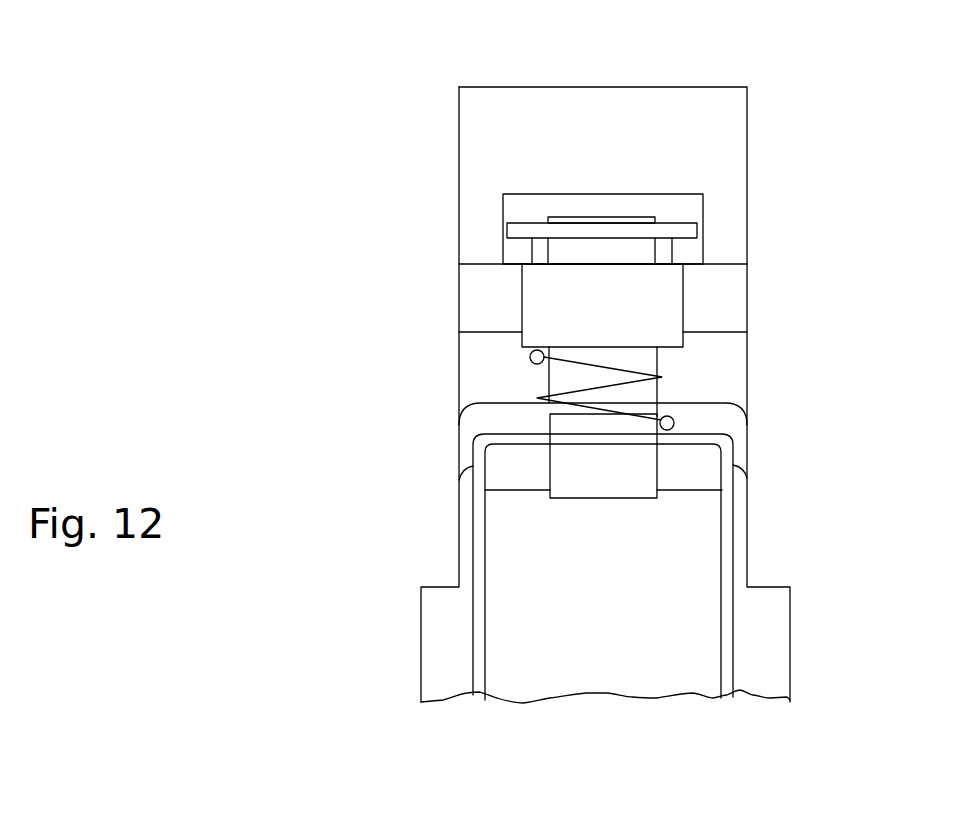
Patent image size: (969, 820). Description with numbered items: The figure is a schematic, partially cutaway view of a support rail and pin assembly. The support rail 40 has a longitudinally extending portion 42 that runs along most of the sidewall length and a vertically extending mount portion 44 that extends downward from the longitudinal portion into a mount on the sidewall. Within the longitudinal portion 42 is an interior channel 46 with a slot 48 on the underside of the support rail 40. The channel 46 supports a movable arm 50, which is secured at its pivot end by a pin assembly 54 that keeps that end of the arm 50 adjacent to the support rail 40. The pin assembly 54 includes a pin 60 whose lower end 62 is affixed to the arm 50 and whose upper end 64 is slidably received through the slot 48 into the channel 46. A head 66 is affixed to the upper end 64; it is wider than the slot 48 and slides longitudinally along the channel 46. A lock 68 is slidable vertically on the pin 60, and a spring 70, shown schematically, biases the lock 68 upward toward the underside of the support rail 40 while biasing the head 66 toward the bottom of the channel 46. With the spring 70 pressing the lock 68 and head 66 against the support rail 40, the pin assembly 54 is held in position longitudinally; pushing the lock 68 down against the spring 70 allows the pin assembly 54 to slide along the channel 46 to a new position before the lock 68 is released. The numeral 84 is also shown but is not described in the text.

The support rail 40 is at (747, 165).
The longitudinally extending portion 42 is at (459, 160).
The vertically extending mount portion 44 is at (747, 365).
The interior channel 46 is at (627, 195).
The slot 48 is at (532, 252).
The arm 50 is at (470, 451).
The pin assembly 54 is at (295, 353).
The pin 60 is at (658, 362).
The lower end 62 is at (657, 477).
The upper end 64 is at (670, 252).
The head 66 is at (533, 223).
The lock 68 is at (522, 313).
The spring 70 is at (542, 398).
The cable 84 is at (267, 0).